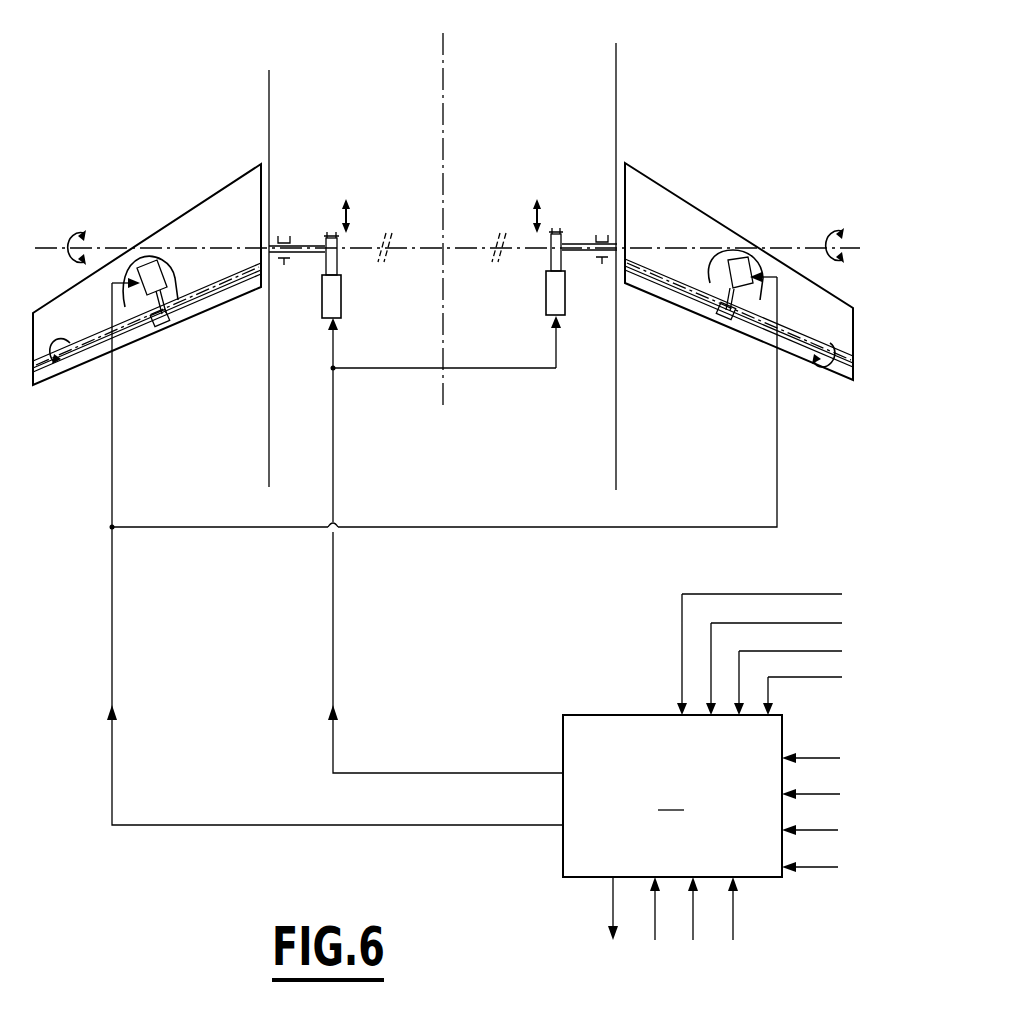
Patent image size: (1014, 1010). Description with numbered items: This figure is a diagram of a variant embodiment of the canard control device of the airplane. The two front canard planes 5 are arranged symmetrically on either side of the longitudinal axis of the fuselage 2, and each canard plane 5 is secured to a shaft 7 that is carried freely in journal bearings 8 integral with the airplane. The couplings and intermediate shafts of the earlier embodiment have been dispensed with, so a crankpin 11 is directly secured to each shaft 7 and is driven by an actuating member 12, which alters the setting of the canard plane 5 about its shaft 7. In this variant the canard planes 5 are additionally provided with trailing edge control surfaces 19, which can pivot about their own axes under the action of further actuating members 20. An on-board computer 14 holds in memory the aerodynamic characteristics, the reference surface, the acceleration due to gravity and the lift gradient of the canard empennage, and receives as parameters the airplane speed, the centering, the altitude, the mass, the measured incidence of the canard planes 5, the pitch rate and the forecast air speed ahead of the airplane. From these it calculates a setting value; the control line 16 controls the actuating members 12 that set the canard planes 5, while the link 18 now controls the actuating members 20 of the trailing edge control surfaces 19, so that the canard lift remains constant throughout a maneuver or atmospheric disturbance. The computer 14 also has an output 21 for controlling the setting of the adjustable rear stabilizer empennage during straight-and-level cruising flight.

The fuselage 2 is at (617, 75).
The canard plane 5 is at (197, 222).
The shaft 7 is at (304, 243).
The journal bearing 8 is at (285, 263).
The crankpin 11 is at (322, 235).
The actuating member 12 is at (340, 300).
The computer 14 is at (738, 777).
The control line 16 is at (331, 743).
The link 18 is at (168, 824).
The trailing edge control surface 19 is at (127, 343).
The actuating member 20 is at (153, 270).
The output 21 is at (613, 907).